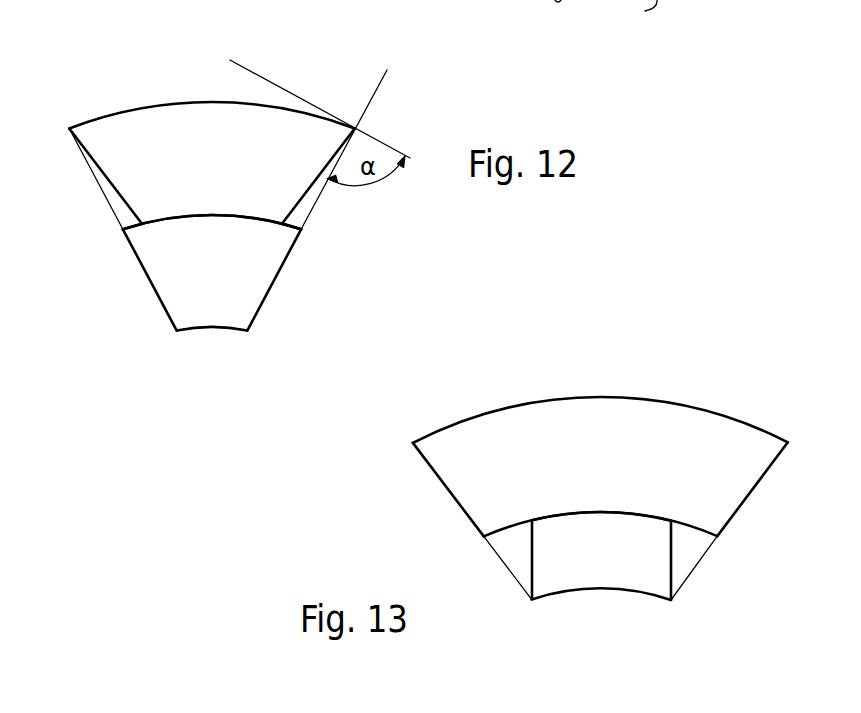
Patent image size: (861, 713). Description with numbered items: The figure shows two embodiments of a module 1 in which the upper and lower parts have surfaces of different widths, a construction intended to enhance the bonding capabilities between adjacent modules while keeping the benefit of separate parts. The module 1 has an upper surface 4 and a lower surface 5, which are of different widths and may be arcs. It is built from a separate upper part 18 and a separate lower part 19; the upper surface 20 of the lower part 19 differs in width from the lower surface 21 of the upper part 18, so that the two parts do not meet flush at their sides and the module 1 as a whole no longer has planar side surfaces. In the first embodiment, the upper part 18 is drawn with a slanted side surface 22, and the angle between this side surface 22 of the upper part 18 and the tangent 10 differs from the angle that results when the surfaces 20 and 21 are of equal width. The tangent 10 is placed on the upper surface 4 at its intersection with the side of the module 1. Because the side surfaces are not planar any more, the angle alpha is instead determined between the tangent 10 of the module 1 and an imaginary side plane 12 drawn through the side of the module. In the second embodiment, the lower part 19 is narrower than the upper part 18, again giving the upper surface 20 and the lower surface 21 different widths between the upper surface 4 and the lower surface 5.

In FIG. 12, the module 1 is at (108, 85).
In FIG. 13, the module 1 is at (537, 388).
In FIG. 12, the upper surface 4 is at (165, 104).
In FIG. 13, the upper surface 4 is at (668, 403).
In FIG. 12, the lower surface 5 is at (213, 330).
In FIG. 13, the lower surface 5 is at (645, 595).
In FIG. 12, the tangent 10 is at (382, 140).
In FIG. 12, the imaginary side plane 12 is at (372, 100).
In FIG. 12, the upper part 18 is at (235, 125).
In FIG. 13, the upper part 18 is at (706, 458).
In FIG. 12, the lower part 19 is at (242, 277).
In FIG. 13, the lower part 19 is at (652, 555).
In FIG. 12, the upper surface of the lower part 20 is at (197, 220).
In FIG. 13, the upper surface of the lower part 20 is at (623, 513).
In FIG. 12, the lower surface of the upper part 21 is at (230, 213).
In FIG. 13, the lower surface of the upper part 21 is at (580, 512).
In FIG. 12, the side surface of the upper part 22 is at (303, 200).